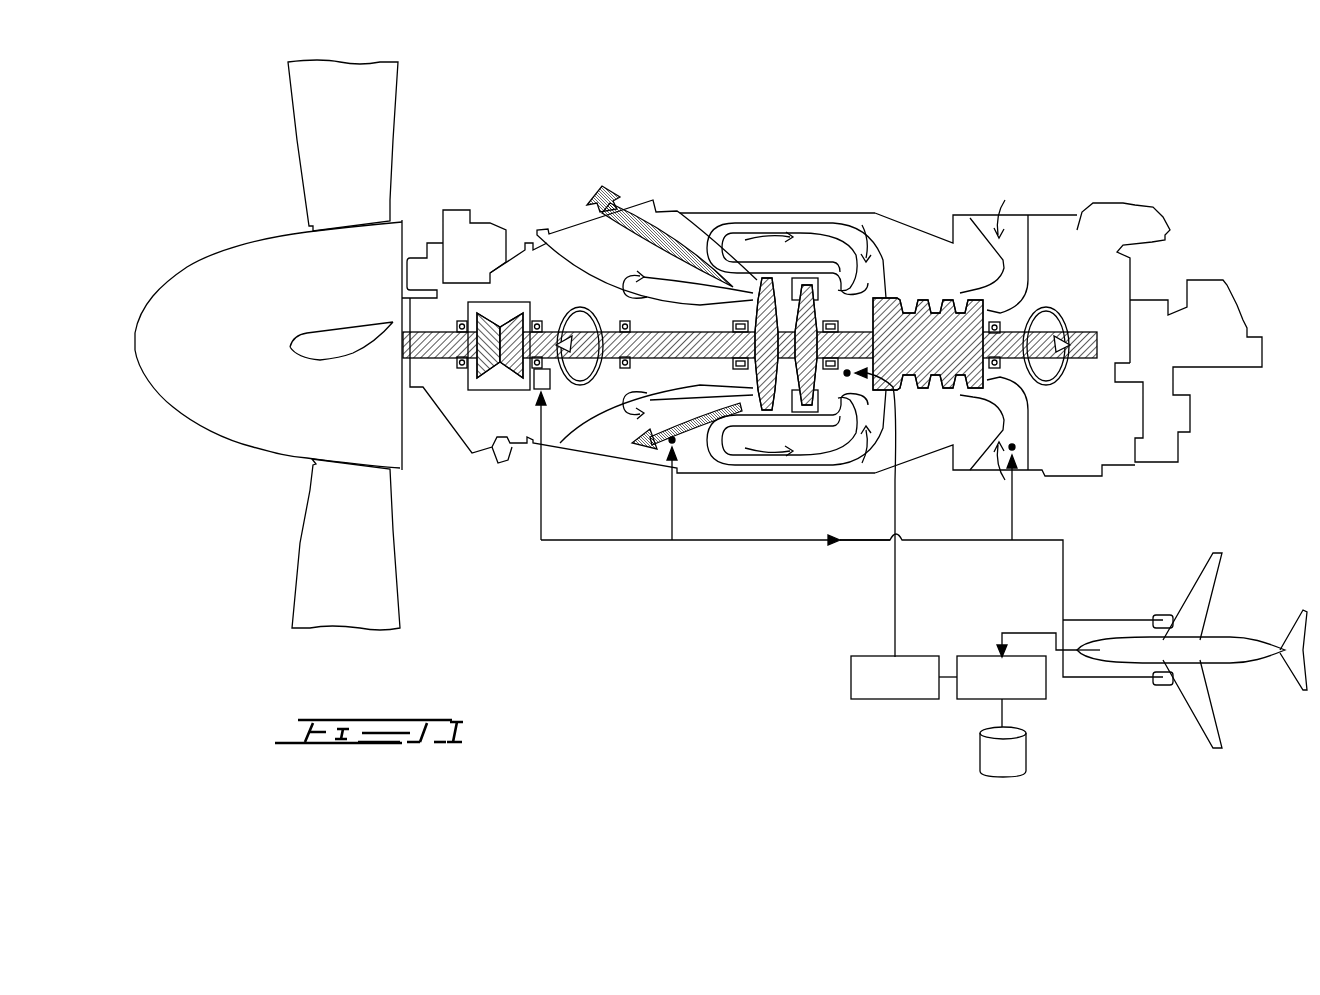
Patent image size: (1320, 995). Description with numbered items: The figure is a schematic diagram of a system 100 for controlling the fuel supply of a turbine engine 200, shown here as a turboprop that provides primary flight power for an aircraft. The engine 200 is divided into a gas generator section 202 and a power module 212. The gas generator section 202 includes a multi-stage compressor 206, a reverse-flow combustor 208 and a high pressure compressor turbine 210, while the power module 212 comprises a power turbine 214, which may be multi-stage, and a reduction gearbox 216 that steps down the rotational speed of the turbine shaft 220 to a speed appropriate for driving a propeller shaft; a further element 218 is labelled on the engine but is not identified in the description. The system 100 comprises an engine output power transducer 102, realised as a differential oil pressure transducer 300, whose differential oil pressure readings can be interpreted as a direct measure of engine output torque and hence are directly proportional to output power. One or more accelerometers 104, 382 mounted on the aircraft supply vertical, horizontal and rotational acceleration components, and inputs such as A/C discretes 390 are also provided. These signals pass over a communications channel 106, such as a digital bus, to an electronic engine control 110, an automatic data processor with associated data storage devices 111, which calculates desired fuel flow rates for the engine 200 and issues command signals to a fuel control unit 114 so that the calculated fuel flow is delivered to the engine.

The system for controlling a fuel supply 100 is at (895, 722).
The engine output power transducer 102 is at (1013, 447).
The accelerometer 104 is at (1180, 645).
The communications channel 106 is at (757, 547).
The electronic engine control 110 is at (1001, 677).
The data storage device 111 is at (1003, 738).
The fuel control unit 114 is at (904, 677).
The turbine engine 200 is at (1042, 102).
The gas generator section 202 is at (1103, 188).
The multi-stage compressor 206 is at (980, 290).
The reverse-flow combustor 208 is at (845, 385).
The high pressure compressor turbine 210 is at (798, 283).
The power module 212 is at (790, 170).
The power turbine 214 is at (757, 280).
The reduction gearbox 216 is at (400, 290).
The propeller hub 218 is at (400, 347).
The turbine shaft 220 is at (672, 348).
The differential oil pressure transducer 300 is at (540, 388).
The accelerometer 382 is at (1195, 670).
The A/C discretes 390 is at (586, 346).